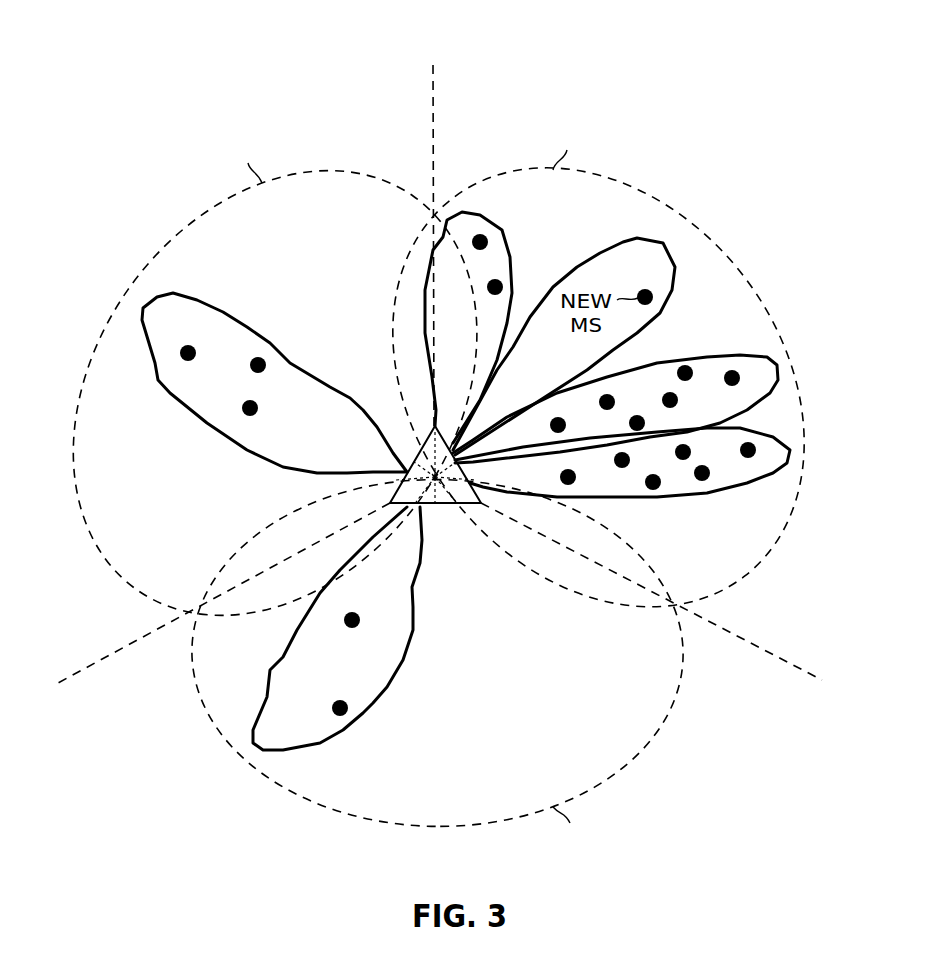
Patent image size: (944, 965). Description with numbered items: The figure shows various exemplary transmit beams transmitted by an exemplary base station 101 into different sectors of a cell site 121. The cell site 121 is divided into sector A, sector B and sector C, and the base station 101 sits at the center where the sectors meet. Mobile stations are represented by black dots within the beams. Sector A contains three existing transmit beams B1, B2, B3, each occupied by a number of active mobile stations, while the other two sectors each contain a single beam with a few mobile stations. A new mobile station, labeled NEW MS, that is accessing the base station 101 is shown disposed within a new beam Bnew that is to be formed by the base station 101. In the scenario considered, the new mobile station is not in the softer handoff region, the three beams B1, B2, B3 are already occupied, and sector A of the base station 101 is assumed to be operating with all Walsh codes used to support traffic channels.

The cell site 121 is at (275, 78).
The base station 101 is at (440, 507).
The transmit beam B1 is at (710, 498).
The transmit beam B2 is at (717, 355).
The transmit beam B3 is at (502, 228).
The new beam Bnew is at (615, 240).